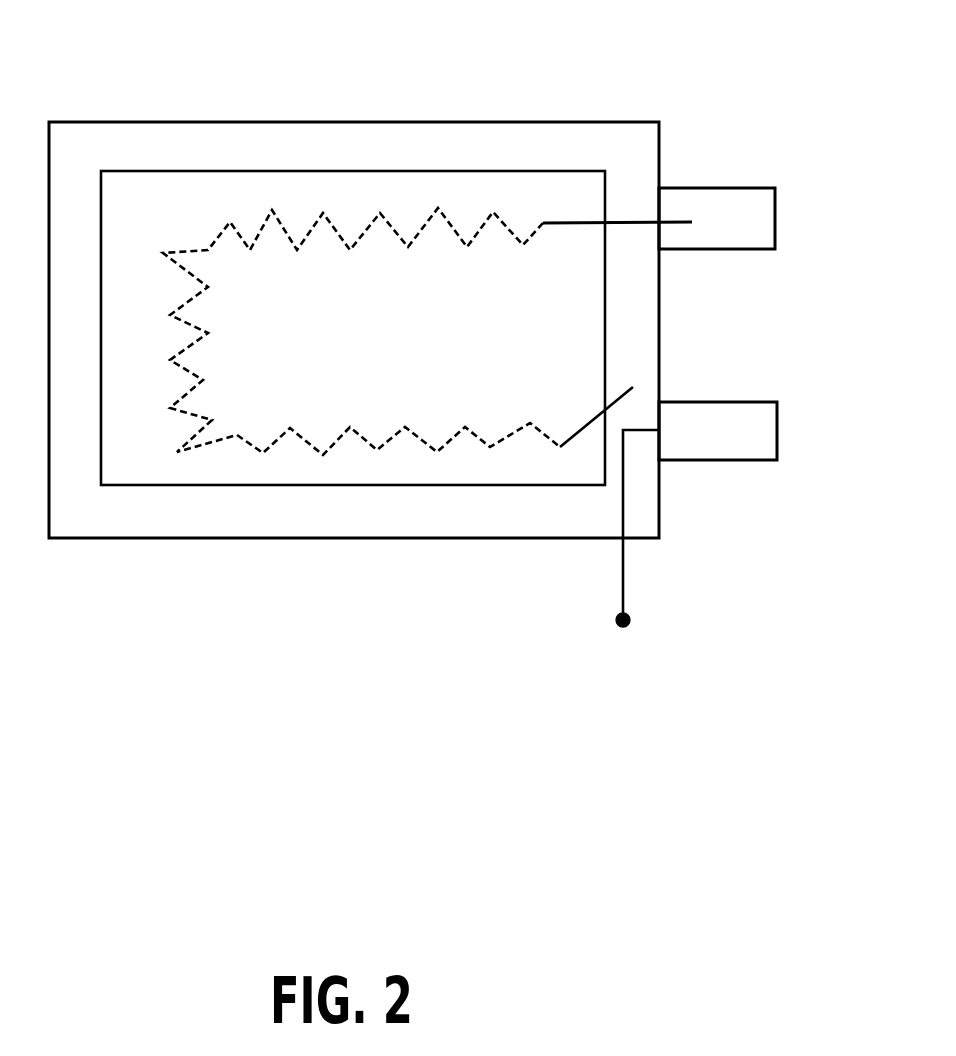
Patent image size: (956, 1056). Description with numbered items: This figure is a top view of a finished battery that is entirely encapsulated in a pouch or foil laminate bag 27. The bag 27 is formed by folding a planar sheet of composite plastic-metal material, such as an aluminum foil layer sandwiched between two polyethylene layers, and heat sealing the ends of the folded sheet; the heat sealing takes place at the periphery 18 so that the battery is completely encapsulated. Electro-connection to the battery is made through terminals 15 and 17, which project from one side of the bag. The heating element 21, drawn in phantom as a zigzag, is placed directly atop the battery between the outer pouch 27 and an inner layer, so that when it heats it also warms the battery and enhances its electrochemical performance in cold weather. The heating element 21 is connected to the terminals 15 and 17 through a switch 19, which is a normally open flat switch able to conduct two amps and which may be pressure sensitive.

The terminal 15 is at (758, 422).
The terminal 17 is at (762, 215).
The periphery 18 is at (642, 295).
The switch 19 is at (634, 558).
The heating element 21 is at (490, 448).
The foil laminate bag 27 is at (170, 195).